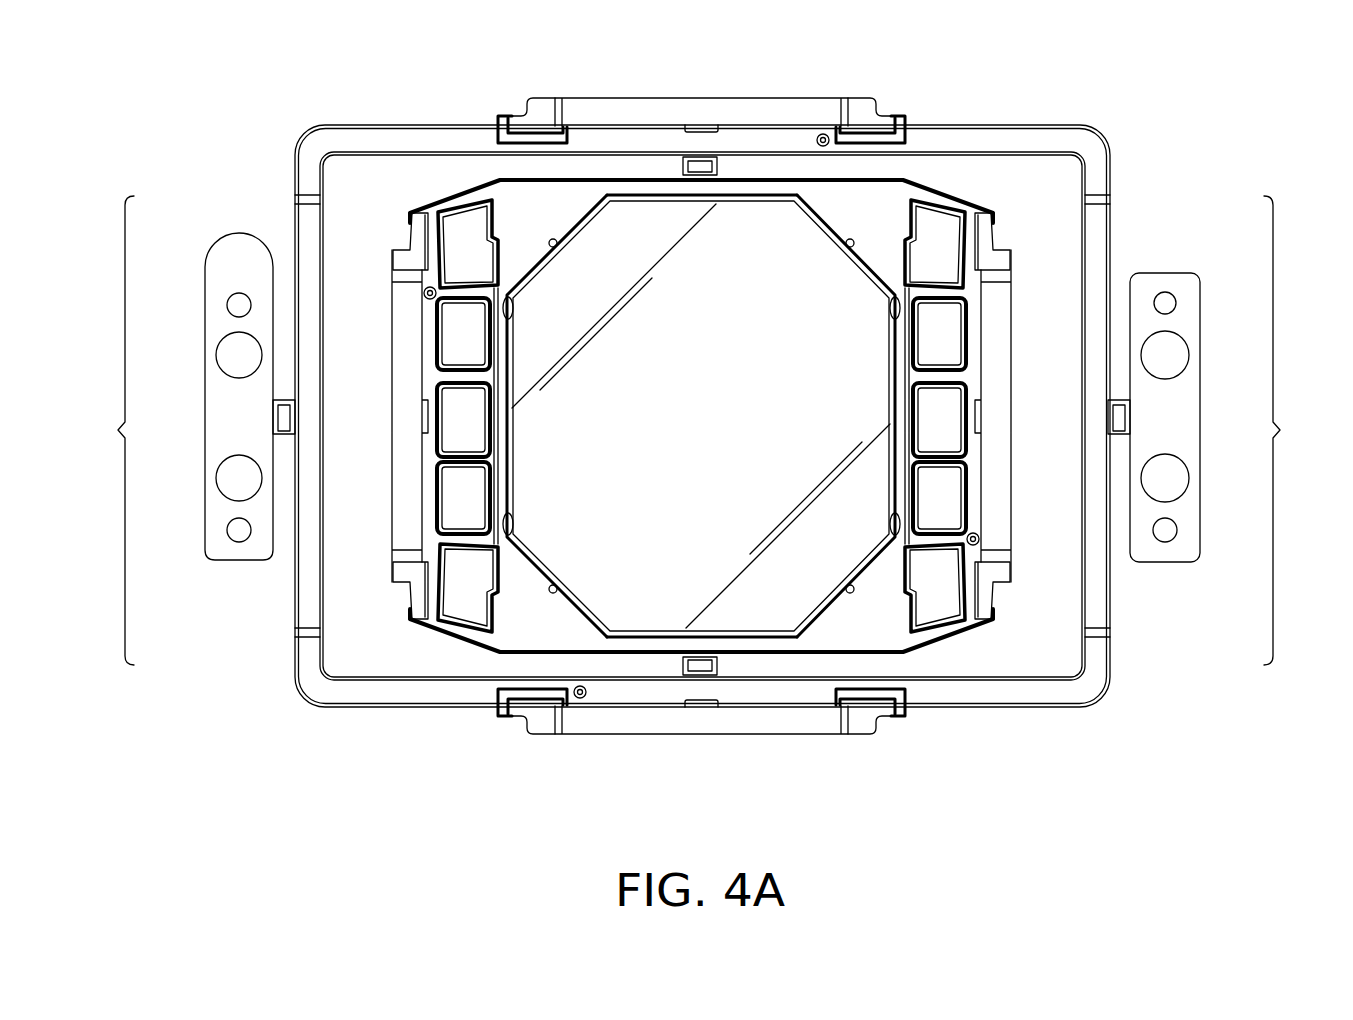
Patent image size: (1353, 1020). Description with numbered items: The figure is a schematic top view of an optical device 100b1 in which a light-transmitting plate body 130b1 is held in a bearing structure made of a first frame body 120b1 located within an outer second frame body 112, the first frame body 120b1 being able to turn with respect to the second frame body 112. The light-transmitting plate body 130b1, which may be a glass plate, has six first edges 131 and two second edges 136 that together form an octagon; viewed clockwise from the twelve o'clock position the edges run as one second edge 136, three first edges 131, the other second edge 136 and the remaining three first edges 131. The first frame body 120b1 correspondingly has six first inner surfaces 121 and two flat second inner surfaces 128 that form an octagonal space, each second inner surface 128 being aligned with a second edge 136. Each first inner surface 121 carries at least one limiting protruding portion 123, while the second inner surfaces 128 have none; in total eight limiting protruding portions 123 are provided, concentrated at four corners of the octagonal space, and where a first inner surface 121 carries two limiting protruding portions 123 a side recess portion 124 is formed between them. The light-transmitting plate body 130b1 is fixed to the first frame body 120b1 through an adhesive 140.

The optical device 100b1 is at (1200, 145).
The second frame body 112 is at (1020, 127).
The first frame body 120b1 is at (893, 190).
The first inner surface 121 is at (703, 430).
The limiting protruding portion 123 is at (538, 283).
The side recess portion 124 is at (900, 423).
The second inner surface 128 is at (679, 197).
The light-transmitting plate body 130b1 is at (734, 437).
The first edge 131 is at (536, 286).
The second edge 136 is at (727, 203).
The adhesive 140 is at (500, 287).